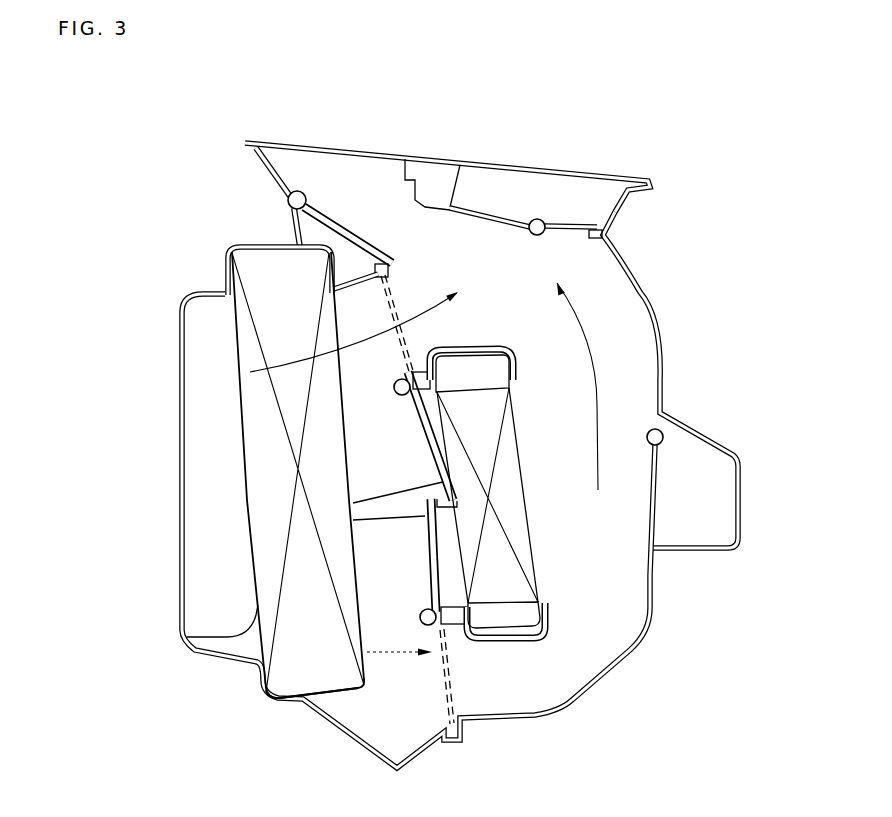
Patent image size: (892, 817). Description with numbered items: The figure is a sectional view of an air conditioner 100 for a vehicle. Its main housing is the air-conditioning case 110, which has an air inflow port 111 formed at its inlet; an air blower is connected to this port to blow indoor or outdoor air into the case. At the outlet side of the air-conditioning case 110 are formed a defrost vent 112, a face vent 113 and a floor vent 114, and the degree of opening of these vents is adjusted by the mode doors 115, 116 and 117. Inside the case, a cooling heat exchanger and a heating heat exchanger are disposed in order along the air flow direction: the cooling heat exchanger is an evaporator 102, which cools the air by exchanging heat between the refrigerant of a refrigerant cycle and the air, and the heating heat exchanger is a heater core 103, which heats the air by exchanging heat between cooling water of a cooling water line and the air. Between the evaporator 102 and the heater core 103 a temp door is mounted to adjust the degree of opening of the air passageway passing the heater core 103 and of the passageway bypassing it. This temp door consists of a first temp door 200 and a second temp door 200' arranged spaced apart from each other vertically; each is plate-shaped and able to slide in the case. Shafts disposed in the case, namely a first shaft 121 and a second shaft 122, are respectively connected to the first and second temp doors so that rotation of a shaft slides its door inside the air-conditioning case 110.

The air conditioner 100 is at (710, 207).
The evaporator 102 is at (267, 483).
The heater core 103 is at (507, 570).
The air-conditioning case 110 is at (657, 290).
The air inflow port 111 is at (208, 600).
The defrost vent 112 is at (347, 173).
The face vent 113 is at (508, 190).
The floor vent 114 is at (700, 483).
The mode door 115 is at (326, 233).
The mode door 116 is at (612, 238).
The mode door 117 is at (652, 503).
The first shaft 121 is at (395, 380).
The second shaft 122 is at (420, 617).
The first temp door 200 is at (271, 475).
The second temp door 200' is at (271, 708).